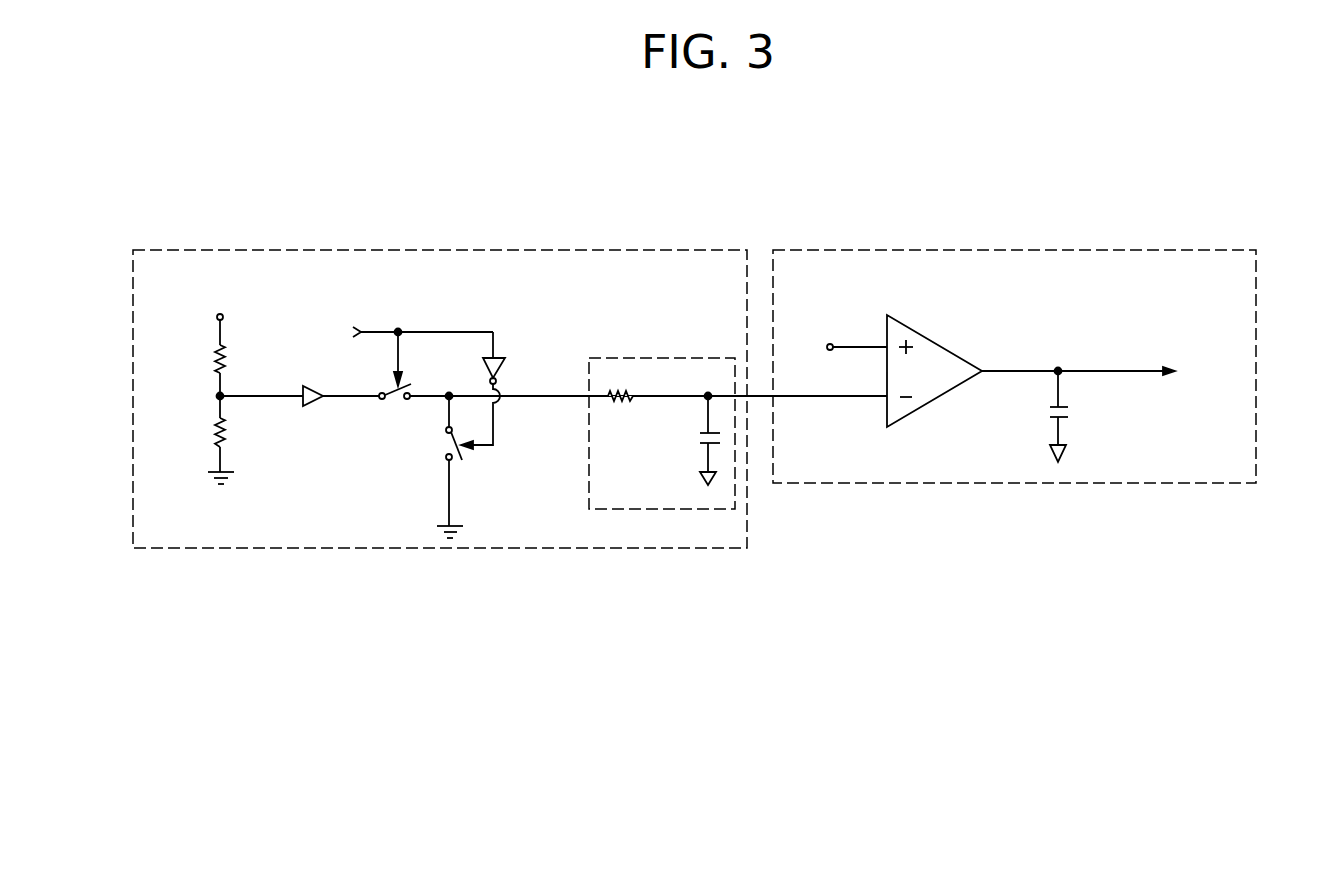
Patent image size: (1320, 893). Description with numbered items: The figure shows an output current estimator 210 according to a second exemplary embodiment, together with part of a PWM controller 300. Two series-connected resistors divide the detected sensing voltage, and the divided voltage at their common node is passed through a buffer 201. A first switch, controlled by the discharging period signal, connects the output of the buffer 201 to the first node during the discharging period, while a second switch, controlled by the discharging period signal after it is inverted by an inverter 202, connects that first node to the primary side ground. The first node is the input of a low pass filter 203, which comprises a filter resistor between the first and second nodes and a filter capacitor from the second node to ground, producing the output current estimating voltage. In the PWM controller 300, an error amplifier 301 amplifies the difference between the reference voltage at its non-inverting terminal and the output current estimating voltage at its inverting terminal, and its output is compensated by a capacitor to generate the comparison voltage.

The output current estimator 210 is at (460, 250).
The buffer 201 is at (304, 388).
The inverter 202 is at (506, 367).
The low pass filter 203 is at (670, 358).
The PWM controller 300 is at (1043, 250).
The error amplifier 301 is at (937, 342).